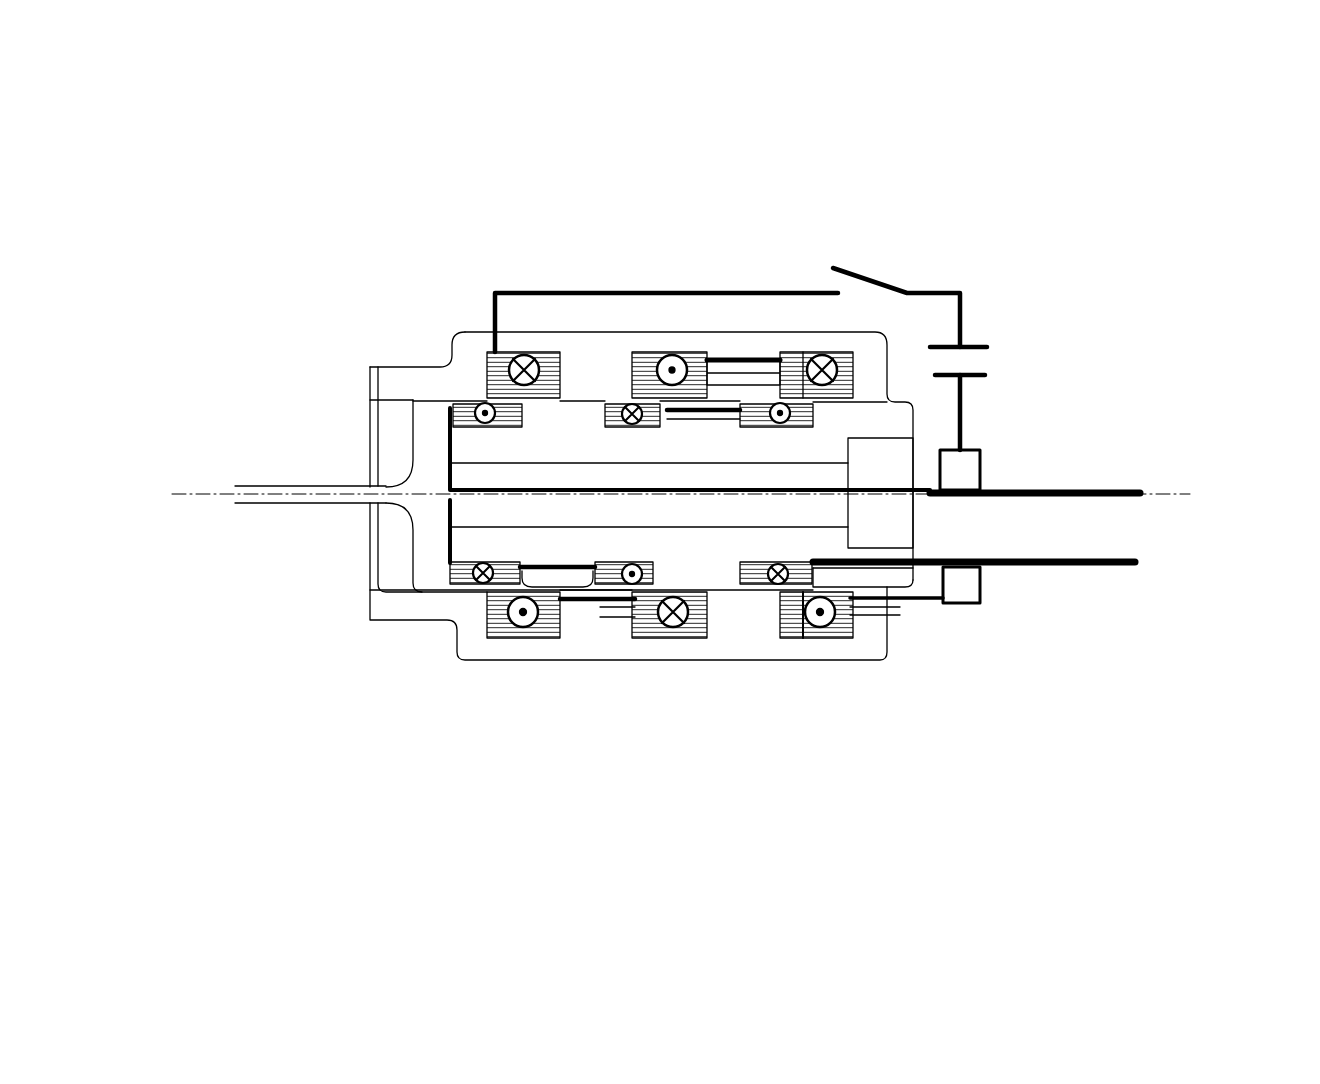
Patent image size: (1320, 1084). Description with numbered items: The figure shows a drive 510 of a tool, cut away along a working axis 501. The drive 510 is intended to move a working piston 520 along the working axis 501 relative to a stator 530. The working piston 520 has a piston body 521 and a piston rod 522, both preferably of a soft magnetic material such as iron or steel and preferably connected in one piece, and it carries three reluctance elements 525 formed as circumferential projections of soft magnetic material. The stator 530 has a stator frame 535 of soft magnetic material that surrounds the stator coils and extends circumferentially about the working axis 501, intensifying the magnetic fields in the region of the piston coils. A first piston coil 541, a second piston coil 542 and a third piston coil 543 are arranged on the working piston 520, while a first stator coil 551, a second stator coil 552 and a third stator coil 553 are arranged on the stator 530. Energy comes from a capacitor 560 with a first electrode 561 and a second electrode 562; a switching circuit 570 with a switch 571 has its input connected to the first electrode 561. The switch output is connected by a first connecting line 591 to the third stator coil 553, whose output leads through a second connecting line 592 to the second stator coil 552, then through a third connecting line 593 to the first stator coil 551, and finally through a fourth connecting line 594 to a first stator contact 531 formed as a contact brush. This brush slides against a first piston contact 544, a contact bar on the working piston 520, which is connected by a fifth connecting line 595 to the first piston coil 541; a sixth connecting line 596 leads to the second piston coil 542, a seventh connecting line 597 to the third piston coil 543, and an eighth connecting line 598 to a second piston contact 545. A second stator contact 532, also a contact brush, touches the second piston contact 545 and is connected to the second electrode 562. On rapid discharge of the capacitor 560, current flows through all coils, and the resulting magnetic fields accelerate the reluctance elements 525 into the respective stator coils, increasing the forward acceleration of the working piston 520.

The working axis 501 is at (157, 483).
The drive 510 is at (238, 190).
The working piston 520 is at (255, 337).
The piston body 521 is at (423, 460).
The piston rod 522 is at (290, 487).
The reluctance elements 525 is at (690, 482).
The stator 530 is at (357, 243).
The first stator contact 531 is at (972, 600).
The second stator contact 532 is at (968, 468).
The stator frame 535 is at (457, 372).
The first piston coil 541 is at (752, 580).
The second piston coil 542 is at (613, 600).
The third piston coil 543 is at (457, 583).
The first piston contact 544 is at (1052, 567).
The second piston contact 545 is at (1062, 488).
The first stator coil 551 is at (830, 620).
The second stator coil 552 is at (676, 602).
The third stator coil 553 is at (540, 630).
The capacitor 560 is at (1121, 316).
The first electrode 561 is at (977, 345).
The second electrode 562 is at (970, 370).
The switching circuit 570 is at (939, 196).
The switch 571 is at (875, 277).
The first connecting line 591 is at (490, 307).
The second connecting line 592 is at (583, 605).
The third connecting line 593 is at (767, 356).
The fourth connecting line 594 is at (862, 578).
The fifth connecting line 595 is at (903, 600).
The sixth connecting line 596 is at (727, 356).
The seventh connecting line 597 is at (560, 565).
The eighth connecting line 598 is at (427, 462).